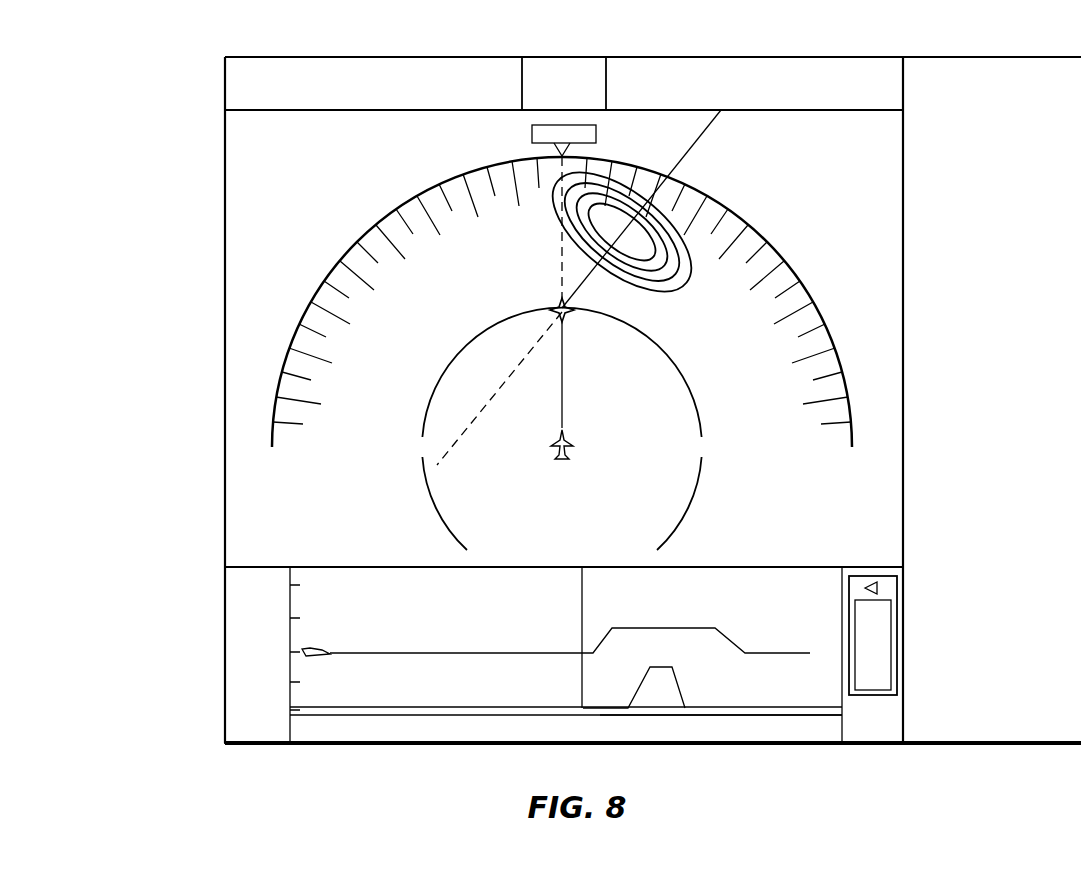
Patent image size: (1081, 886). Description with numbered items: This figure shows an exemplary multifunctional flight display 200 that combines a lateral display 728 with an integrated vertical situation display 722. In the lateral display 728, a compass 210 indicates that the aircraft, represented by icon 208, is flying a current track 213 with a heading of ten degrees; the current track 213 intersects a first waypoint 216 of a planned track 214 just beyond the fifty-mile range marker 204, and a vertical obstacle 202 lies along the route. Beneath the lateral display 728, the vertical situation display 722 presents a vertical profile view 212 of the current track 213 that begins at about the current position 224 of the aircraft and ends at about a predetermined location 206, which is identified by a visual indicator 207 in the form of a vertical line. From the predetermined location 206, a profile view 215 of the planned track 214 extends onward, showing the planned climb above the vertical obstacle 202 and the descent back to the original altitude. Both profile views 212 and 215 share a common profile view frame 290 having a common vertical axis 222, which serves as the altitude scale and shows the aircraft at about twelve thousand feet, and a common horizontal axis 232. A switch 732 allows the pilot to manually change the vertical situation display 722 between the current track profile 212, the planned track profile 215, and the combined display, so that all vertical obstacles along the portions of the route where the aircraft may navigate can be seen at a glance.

The multifunctional flight display 200 is at (824, 43).
The lateral display 728 is at (207, 296).
The integrated vertical situation display 722 is at (207, 656).
The compass 210 is at (417, 201).
The 50-mile range marker 204 is at (463, 346).
The first waypoint 216 is at (557, 305).
The planned track 214 is at (707, 134).
The current track 213 is at (567, 373).
The aircraft icon 208 is at (568, 453).
The vertical obstacle 202 is at (640, 284).
The vertical profile view of current track 212 is at (388, 653).
The visual indicator 207 is at (581, 580).
The vertical profile view of planned track 215 is at (705, 627).
The current position 224 is at (337, 704).
The predetermined location 206 is at (577, 706).
The common vertical axis 222 is at (290, 696).
The common profile view frame 290 is at (420, 722).
The common horizontal axis 232 is at (697, 716).
The switch 732 is at (873, 697).